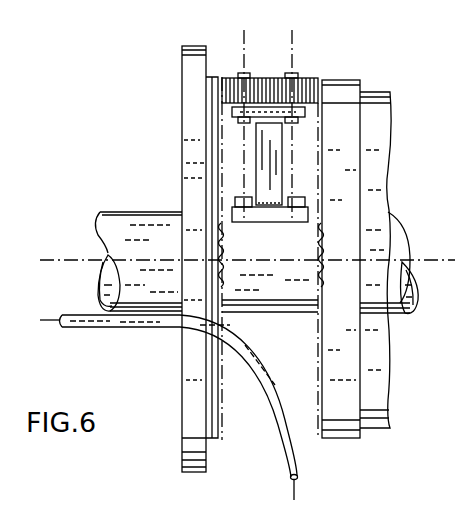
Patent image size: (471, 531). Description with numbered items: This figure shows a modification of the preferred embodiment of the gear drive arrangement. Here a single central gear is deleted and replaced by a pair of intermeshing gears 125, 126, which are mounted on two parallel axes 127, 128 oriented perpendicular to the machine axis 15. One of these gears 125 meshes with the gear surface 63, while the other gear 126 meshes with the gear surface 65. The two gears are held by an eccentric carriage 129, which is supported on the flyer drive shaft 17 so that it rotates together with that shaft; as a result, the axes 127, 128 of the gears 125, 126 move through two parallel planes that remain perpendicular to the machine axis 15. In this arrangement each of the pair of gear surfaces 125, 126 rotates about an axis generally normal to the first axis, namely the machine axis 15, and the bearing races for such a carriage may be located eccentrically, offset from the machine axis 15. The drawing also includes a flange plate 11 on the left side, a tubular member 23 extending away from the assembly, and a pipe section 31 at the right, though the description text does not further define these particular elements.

The flange plate 11 is at (182, 452).
The machine axis 15 is at (90, 260).
The flyer drive shaft 17 is at (118, 214).
The hose 23 is at (278, 410).
The pipe section 31 is at (372, 95).
The gear surface 63 is at (220, 77).
The gear surface 65 is at (322, 80).
The gear 125 is at (233, 73).
The gear 126 is at (313, 77).
The axis 127 is at (244, 60).
The axis 128 is at (294, 50).
The eccentric carriage 129 is at (253, 142).